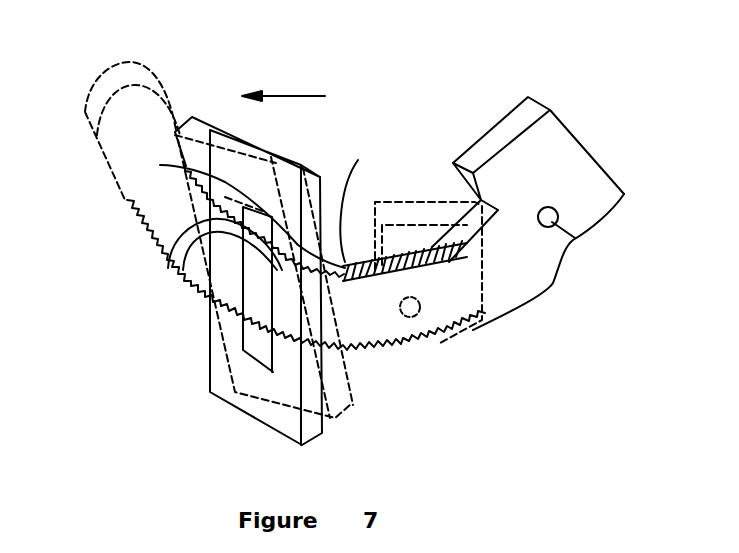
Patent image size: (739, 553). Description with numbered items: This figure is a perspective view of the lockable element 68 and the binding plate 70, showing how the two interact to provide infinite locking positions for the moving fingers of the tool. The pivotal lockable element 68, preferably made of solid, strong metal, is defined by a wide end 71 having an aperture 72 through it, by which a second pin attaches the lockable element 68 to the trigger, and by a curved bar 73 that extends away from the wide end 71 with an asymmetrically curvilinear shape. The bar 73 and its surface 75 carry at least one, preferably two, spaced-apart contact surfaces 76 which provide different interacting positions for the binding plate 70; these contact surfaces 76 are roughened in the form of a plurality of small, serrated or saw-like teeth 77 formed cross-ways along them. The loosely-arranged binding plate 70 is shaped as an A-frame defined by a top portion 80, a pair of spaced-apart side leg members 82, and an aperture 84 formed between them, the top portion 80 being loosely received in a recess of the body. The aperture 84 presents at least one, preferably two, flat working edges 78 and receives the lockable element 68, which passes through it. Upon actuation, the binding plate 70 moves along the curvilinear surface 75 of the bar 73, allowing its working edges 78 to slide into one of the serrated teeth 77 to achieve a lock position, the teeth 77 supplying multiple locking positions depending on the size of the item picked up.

The lockable element 68 is at (593, 142).
The binding plate 70 is at (303, 168).
The wide end 71 is at (618, 197).
The aperture 72 is at (573, 238).
The curved bar 73 is at (467, 285).
The surface 75 is at (370, 316).
The contact surfaces 76 is at (355, 352).
The serrated teeth 77 is at (338, 215).
The working edges 78 is at (160, 165).
The top portion 80 is at (296, 156).
The side leg members 82 is at (290, 358).
The aperture 84 is at (258, 336).